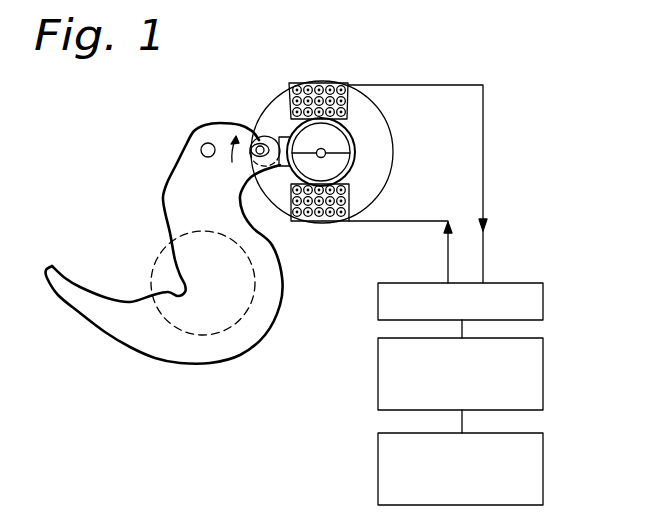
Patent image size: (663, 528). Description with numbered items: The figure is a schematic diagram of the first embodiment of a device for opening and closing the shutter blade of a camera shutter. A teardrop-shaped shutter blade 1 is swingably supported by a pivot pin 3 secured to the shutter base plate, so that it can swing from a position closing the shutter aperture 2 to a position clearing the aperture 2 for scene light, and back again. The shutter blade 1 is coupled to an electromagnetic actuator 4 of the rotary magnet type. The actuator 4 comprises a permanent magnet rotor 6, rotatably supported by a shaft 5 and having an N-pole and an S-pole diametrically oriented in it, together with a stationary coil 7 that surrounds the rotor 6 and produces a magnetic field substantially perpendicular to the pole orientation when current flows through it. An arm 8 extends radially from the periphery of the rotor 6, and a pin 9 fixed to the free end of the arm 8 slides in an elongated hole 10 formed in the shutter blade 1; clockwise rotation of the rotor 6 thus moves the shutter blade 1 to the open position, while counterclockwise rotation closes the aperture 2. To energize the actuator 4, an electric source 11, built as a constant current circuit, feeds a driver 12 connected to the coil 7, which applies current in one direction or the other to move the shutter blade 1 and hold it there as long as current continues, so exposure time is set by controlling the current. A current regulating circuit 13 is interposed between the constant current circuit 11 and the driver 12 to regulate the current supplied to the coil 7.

The shutter blade 1 is at (137, 334).
The shutter aperture 2 is at (228, 333).
The pivot pin 3 is at (203, 143).
The electromagnetic actuator 4 is at (346, 74).
The shaft 5 is at (325, 149).
The permanent magnet rotor 6 is at (355, 157).
The stationary coil 7 is at (318, 82).
The arm 8 is at (290, 137).
The pin 9 is at (254, 146).
The elongated hole 10 is at (287, 184).
The electric source 11 is at (544, 466).
The driver 12 is at (544, 302).
The current regulating circuit 13 is at (544, 376).